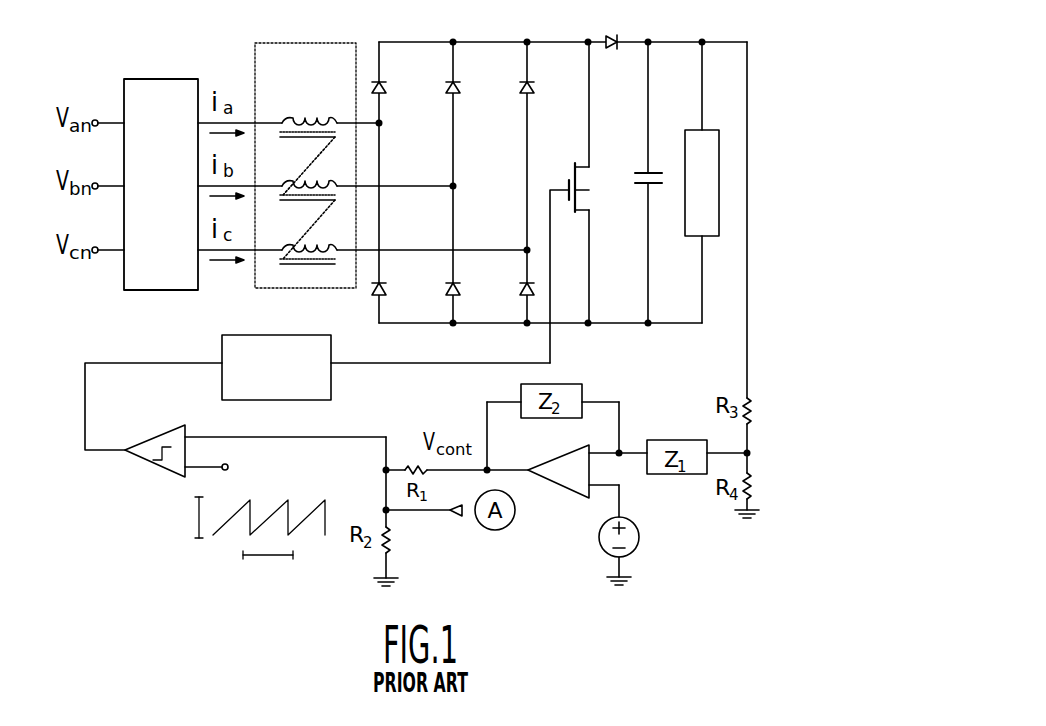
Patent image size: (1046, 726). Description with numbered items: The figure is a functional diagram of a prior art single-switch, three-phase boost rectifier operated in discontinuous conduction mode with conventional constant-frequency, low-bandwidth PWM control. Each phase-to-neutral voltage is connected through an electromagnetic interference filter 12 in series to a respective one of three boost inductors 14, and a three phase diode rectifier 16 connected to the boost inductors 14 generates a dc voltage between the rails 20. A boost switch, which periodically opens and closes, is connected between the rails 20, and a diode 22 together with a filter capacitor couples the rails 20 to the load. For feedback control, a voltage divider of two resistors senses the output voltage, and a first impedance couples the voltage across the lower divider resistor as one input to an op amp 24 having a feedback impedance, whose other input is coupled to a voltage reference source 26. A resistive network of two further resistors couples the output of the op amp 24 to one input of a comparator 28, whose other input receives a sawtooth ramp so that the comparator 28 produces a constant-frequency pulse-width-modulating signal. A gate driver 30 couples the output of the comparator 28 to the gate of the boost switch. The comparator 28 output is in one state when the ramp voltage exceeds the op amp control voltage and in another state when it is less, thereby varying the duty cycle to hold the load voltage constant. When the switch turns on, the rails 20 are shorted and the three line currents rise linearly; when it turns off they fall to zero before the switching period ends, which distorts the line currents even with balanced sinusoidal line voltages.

The electromagnetic interference (EMI) filter 12 is at (161, 184).
The boost inductors 14 is at (285, 119).
The three phase diode rectifier 16 is at (497, 159).
The rails 20 is at (543, 42).
The diode 22 is at (609, 38).
The op amp 24 is at (555, 482).
The voltage reference source 26 is at (599, 539).
The comparator 28 is at (152, 432).
The gate driver 30 is at (331, 395).